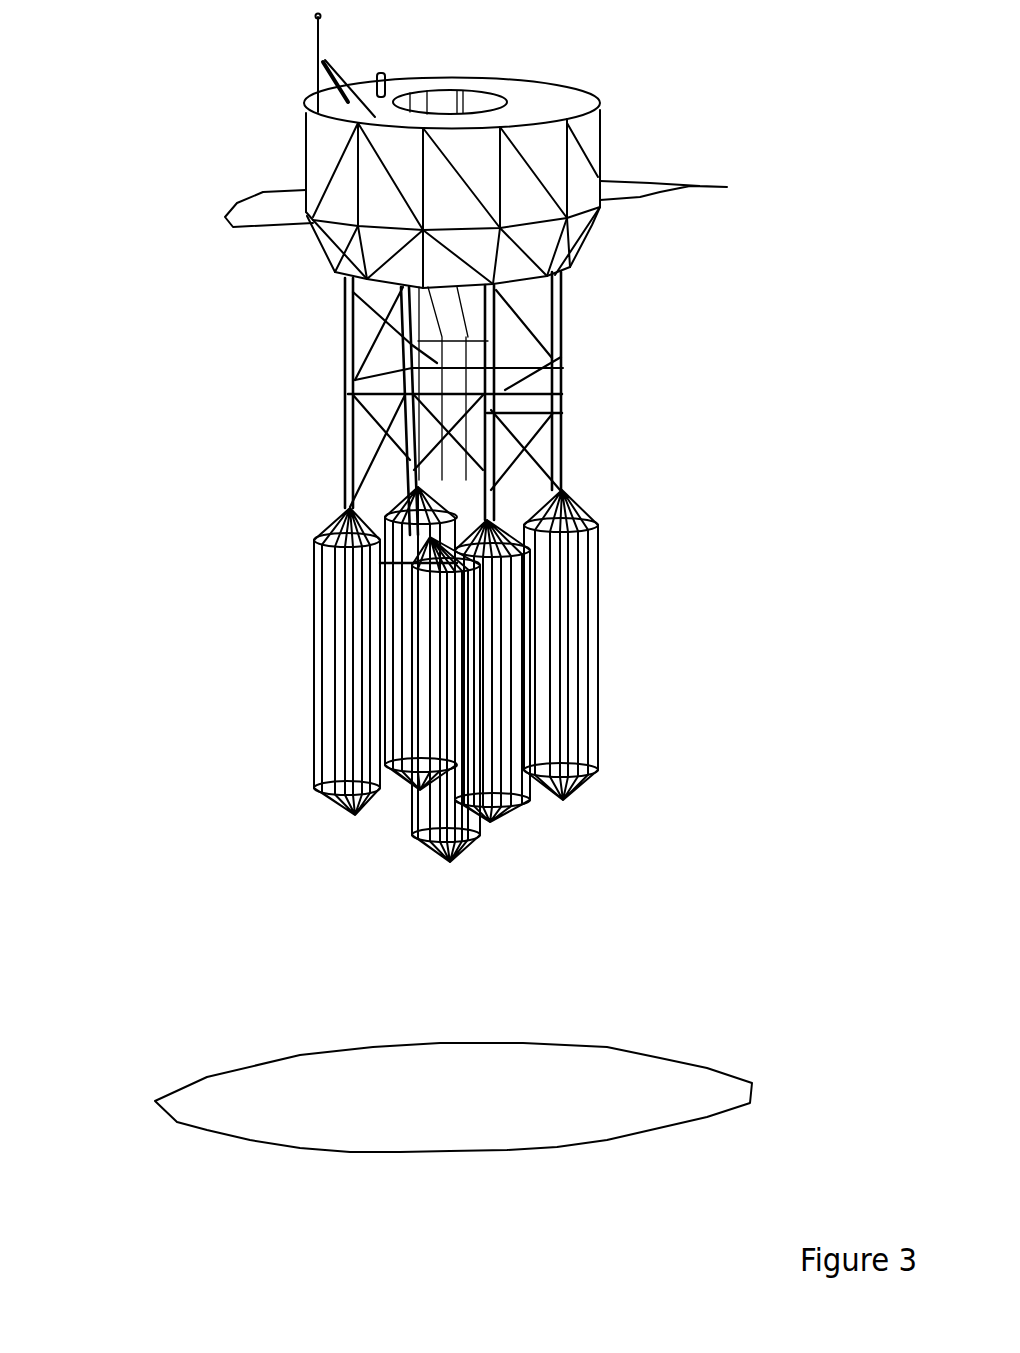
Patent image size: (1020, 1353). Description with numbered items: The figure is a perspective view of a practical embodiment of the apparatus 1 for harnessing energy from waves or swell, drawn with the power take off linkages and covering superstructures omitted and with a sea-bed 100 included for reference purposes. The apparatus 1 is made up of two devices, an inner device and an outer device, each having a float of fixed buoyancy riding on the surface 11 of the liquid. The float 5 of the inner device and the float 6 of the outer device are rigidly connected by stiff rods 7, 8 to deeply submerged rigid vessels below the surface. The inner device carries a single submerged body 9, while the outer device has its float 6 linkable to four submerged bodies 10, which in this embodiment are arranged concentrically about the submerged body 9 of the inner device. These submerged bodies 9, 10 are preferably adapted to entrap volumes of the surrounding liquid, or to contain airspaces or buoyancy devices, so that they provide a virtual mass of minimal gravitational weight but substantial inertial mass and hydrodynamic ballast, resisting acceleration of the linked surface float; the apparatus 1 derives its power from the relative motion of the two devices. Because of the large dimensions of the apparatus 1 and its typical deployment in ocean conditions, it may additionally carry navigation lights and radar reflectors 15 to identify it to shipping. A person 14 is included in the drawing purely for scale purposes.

The apparatus 1 is at (133, 590).
The surface float 5 is at (375, 300).
The surface float 6 is at (603, 123).
The stiff rod 7 is at (567, 421).
The stiff rod 8 is at (567, 322).
The submerged body 9 is at (483, 840).
The submerged body 10 is at (598, 647).
The surface of the liquid 11 is at (496, 198).
The person 14 is at (388, 73).
The navigation lights and radar reflectors 15 is at (313, 30).
The sea-bed 100 is at (703, 1068).